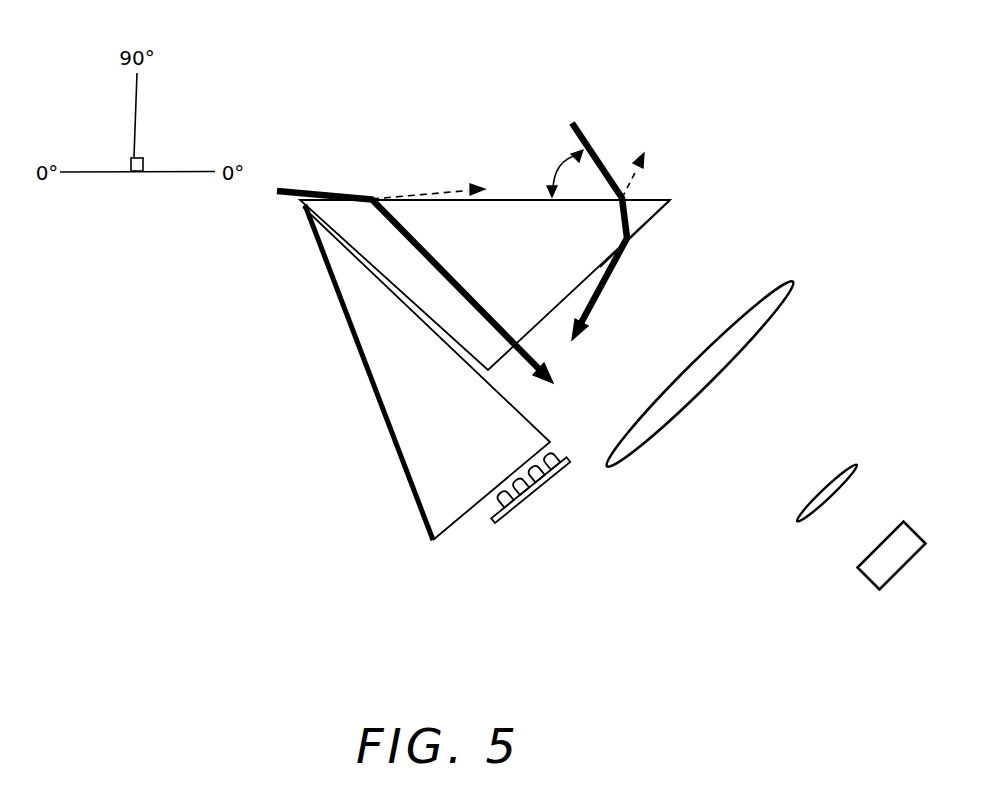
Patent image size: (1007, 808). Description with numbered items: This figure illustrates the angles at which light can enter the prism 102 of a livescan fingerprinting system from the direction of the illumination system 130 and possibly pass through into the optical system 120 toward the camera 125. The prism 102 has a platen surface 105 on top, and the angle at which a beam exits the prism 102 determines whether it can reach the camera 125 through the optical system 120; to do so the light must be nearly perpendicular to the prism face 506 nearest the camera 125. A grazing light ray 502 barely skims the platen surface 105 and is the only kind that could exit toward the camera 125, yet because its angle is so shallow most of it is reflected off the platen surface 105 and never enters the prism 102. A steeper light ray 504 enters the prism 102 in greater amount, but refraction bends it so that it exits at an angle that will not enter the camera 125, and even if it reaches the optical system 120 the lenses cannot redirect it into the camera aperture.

The prism 102 is at (521, 267).
The platen surface 105 is at (510, 199).
The optical system 120 is at (803, 268).
The camera 125 is at (868, 583).
The illumination system 130 is at (222, 368).
The light ray 502 is at (320, 191).
The light ray 504 is at (588, 136).
The prism face 506 is at (636, 228).